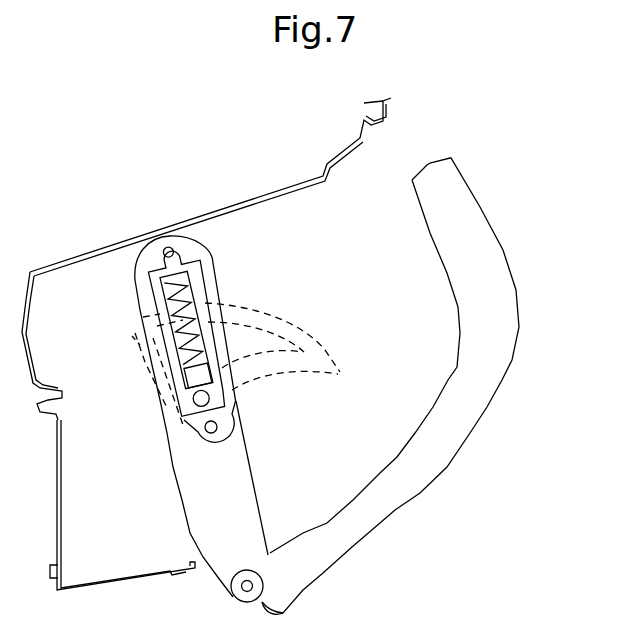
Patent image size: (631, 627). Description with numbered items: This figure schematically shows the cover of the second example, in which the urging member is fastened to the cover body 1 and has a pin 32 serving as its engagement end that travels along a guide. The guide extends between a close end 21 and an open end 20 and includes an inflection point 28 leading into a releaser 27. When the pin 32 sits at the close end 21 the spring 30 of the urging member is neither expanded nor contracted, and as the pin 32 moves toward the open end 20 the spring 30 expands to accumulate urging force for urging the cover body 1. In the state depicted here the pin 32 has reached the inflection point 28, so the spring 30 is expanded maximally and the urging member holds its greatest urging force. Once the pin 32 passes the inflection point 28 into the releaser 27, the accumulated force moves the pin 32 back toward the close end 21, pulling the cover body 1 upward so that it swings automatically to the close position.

The cover body 1 is at (517, 297).
The open end 20 is at (341, 374).
The close end 21 is at (136, 329).
The releaser 27 is at (143, 360).
The inflection point 28 is at (200, 421).
The spring 30 is at (193, 288).
The pin 32 is at (222, 398).